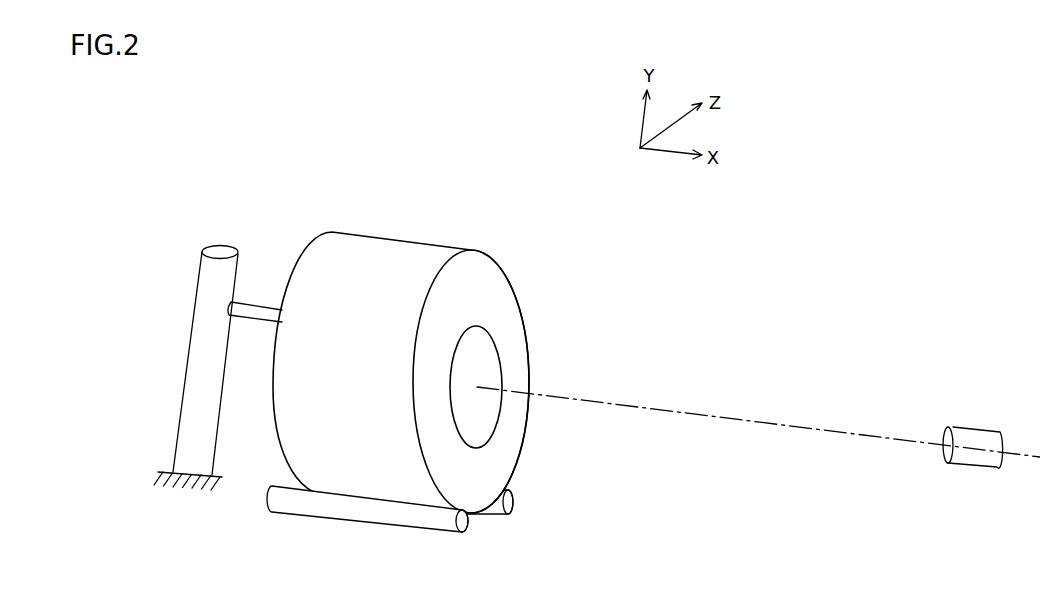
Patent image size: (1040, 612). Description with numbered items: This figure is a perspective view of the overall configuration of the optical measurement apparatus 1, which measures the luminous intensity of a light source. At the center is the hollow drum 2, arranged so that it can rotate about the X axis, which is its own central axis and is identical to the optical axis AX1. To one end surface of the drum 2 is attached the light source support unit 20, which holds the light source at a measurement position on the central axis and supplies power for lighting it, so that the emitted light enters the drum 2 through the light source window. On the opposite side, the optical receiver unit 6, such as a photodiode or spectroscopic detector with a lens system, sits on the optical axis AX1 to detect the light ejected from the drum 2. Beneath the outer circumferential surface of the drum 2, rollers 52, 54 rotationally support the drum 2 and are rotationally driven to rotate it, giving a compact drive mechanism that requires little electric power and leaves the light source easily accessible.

The optical measurement apparatus 1 is at (852, 217).
The hollow drum 2 is at (403, 255).
The light source support unit 20 is at (212, 273).
The roller 52 is at (513, 505).
The roller 54 is at (415, 518).
The optical receiver unit 6 is at (977, 438).
The optical axis AX1 is at (687, 410).